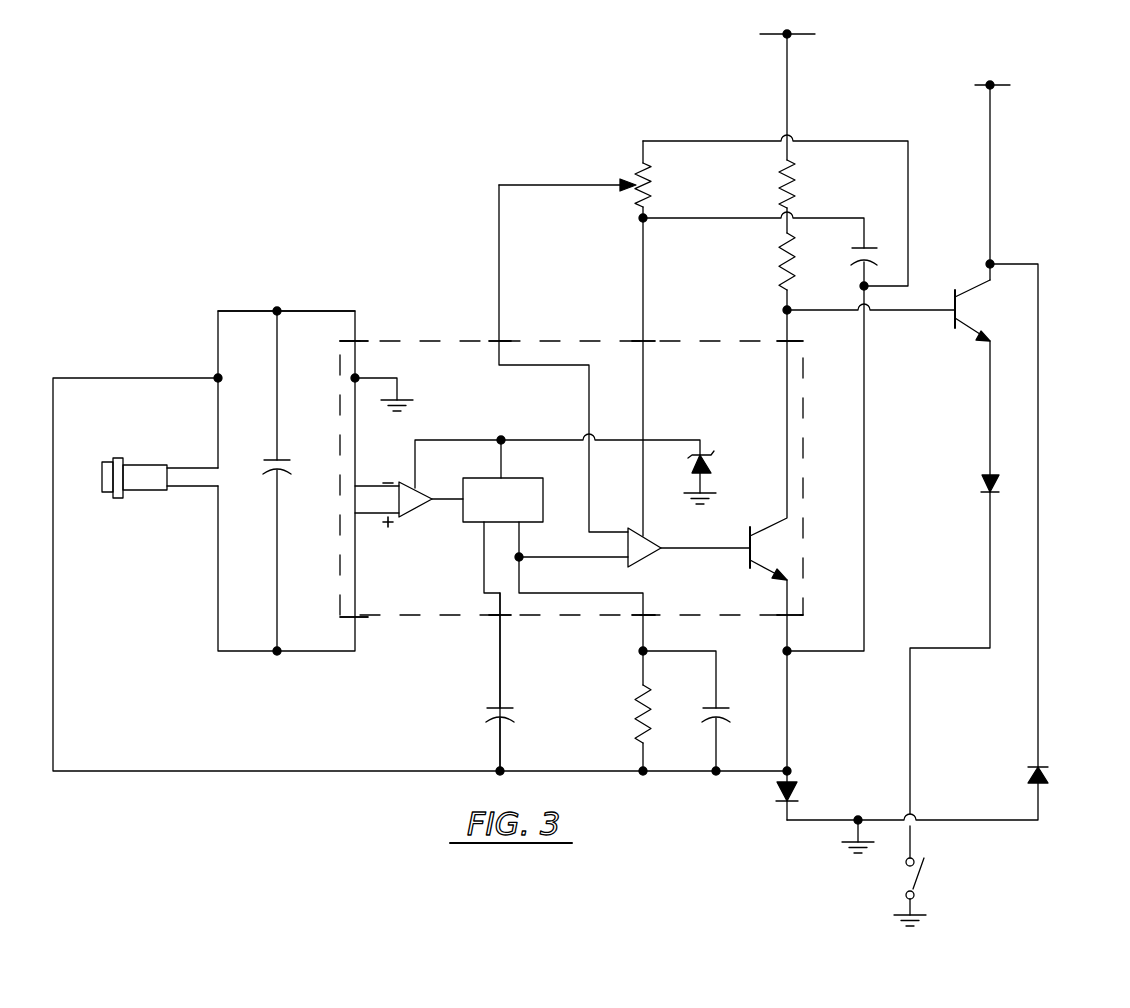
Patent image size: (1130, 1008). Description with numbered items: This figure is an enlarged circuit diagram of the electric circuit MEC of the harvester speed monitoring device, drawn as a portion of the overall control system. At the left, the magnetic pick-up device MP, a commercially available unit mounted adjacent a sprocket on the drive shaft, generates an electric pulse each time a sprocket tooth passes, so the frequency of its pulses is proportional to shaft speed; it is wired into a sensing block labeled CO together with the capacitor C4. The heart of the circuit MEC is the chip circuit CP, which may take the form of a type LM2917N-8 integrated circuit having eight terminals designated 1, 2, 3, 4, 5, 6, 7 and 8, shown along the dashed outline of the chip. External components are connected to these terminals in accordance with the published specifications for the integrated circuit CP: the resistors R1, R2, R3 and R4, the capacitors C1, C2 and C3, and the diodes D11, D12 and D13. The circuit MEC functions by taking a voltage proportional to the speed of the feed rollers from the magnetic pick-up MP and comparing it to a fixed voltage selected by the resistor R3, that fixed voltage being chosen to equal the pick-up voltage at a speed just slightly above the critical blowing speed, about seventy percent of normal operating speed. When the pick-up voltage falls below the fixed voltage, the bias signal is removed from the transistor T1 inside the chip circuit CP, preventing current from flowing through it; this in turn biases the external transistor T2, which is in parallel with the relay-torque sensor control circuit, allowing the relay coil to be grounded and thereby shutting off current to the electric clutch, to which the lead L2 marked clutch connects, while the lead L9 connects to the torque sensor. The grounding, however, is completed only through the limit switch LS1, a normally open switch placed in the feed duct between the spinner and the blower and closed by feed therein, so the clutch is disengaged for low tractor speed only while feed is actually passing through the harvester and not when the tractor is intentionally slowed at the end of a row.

The electric circuit MEC is at (313, 249).
The oscillator / sensor circuit CO is at (344, 272).
The chip circuit CP is at (449, 303).
The magnetic pick-up device MP is at (156, 464).
The capacitor C4 is at (290, 468).
The capacitor C1 is at (514, 712).
The capacitor C2 is at (728, 716).
The capacitor C3 is at (880, 258).
The resistor R1 is at (634, 700).
The resistor R2 is at (795, 168).
The resistor R3 is at (652, 171).
The resistor R4 is at (779, 269).
The transistor T1 is at (776, 521).
The external transistor T2 is at (975, 285).
The diode D11 is at (798, 793).
The diode D12 is at (1050, 778).
The diode D13 is at (980, 478).
The limit switch LS1 is at (925, 879).
The clutch lead L2 is at (800, 32).
The torque sensor lead L9 is at (1003, 82).
The terminal 1 is at (356, 629).
The terminal 2 is at (504, 627).
The terminal 3 is at (646, 627).
The terminal 4 is at (791, 628).
The terminal 5 is at (790, 331).
The terminal 6 is at (645, 332).
The terminal 7 is at (502, 334).
The terminal 8 is at (356, 334).